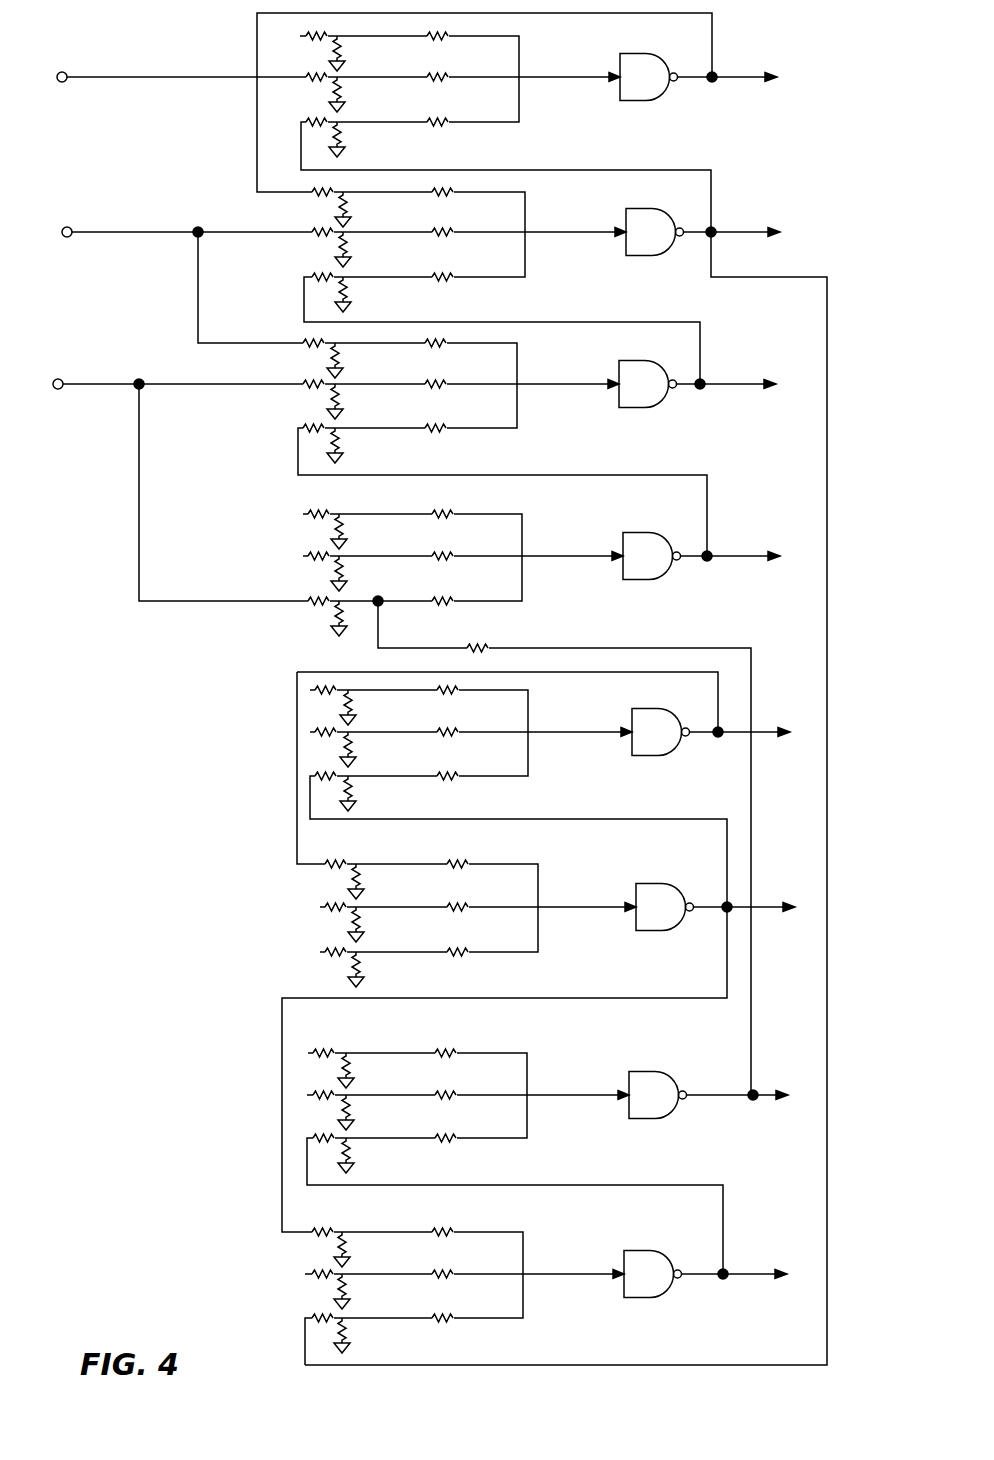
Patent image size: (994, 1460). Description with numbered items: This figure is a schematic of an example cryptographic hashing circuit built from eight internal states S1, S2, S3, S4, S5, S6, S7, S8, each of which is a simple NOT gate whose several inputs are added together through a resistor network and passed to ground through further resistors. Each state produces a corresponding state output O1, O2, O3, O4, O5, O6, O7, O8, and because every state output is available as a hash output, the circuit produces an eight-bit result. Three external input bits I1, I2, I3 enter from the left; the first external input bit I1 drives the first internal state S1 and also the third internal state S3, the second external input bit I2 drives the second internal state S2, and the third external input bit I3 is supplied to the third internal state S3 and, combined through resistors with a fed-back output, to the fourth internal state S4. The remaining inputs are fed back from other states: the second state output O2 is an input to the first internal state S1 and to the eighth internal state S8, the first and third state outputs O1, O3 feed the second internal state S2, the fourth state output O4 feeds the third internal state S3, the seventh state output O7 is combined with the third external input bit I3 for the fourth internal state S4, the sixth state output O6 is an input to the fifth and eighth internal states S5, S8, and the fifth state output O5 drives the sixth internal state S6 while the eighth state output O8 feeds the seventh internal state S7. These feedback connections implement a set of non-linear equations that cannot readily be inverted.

The first external input bit I1 is at (173, 61).
The second external input bit I2 is at (176, 212).
The third external input bit I3 is at (171, 365).
The first internal state S1 is at (631, 92).
The second internal state S2 is at (636, 247).
The third internal state S3 is at (635, 403).
The fourth internal state S4 is at (637, 569).
The fifth internal state S5 is at (646, 746).
The sixth internal state S6 is at (655, 925).
The seventh internal state S7 is at (642, 1113).
The eighth internal state S8 is at (636, 1290).
The first state output O1 is at (738, 63).
The second state output O2 is at (743, 219).
The third state output O3 is at (736, 372).
The fourth state output O4 is at (738, 548).
The fifth state output O5 is at (746, 716).
The sixth state output O6 is at (753, 900).
The seventh state output O7 is at (745, 1080).
The eighth state output O8 is at (743, 1260).